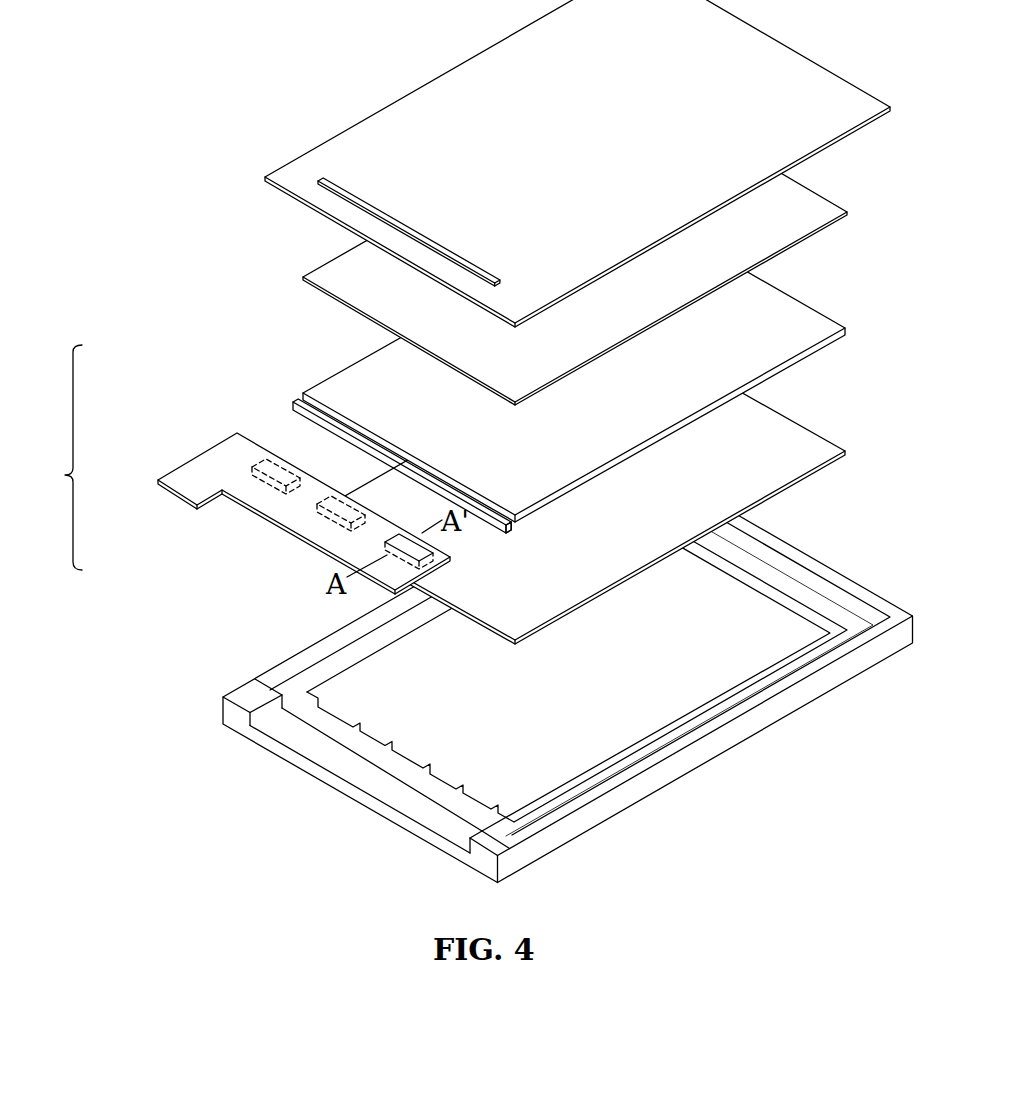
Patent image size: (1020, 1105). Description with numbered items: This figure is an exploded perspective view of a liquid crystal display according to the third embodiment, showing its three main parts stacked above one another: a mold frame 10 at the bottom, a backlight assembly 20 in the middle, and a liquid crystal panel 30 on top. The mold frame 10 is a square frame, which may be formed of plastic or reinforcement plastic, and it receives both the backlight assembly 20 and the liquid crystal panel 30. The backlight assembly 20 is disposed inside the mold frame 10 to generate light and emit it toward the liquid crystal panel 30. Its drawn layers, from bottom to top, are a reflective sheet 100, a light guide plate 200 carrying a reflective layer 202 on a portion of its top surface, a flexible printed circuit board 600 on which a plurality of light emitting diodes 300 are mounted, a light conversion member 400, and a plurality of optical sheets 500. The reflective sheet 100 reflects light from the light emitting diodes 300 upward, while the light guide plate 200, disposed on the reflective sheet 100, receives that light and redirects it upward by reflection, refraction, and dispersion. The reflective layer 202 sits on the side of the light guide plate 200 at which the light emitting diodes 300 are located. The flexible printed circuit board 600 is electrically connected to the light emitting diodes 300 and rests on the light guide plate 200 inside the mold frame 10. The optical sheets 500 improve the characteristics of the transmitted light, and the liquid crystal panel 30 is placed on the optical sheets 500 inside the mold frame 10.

The mold frame 10 is at (238, 673).
The backlight assembly 20 is at (59, 457).
The liquid crystal panel 30 is at (365, 135).
The reflective sheet 100 is at (498, 610).
The light guide plate 200 is at (293, 403).
The reflective layer 202 is at (508, 498).
The light emitting diodes 300 is at (270, 486).
The light conversion member 400 is at (370, 400).
The optical sheets 500 is at (386, 302).
The flexible printed circuit board 600 is at (240, 436).